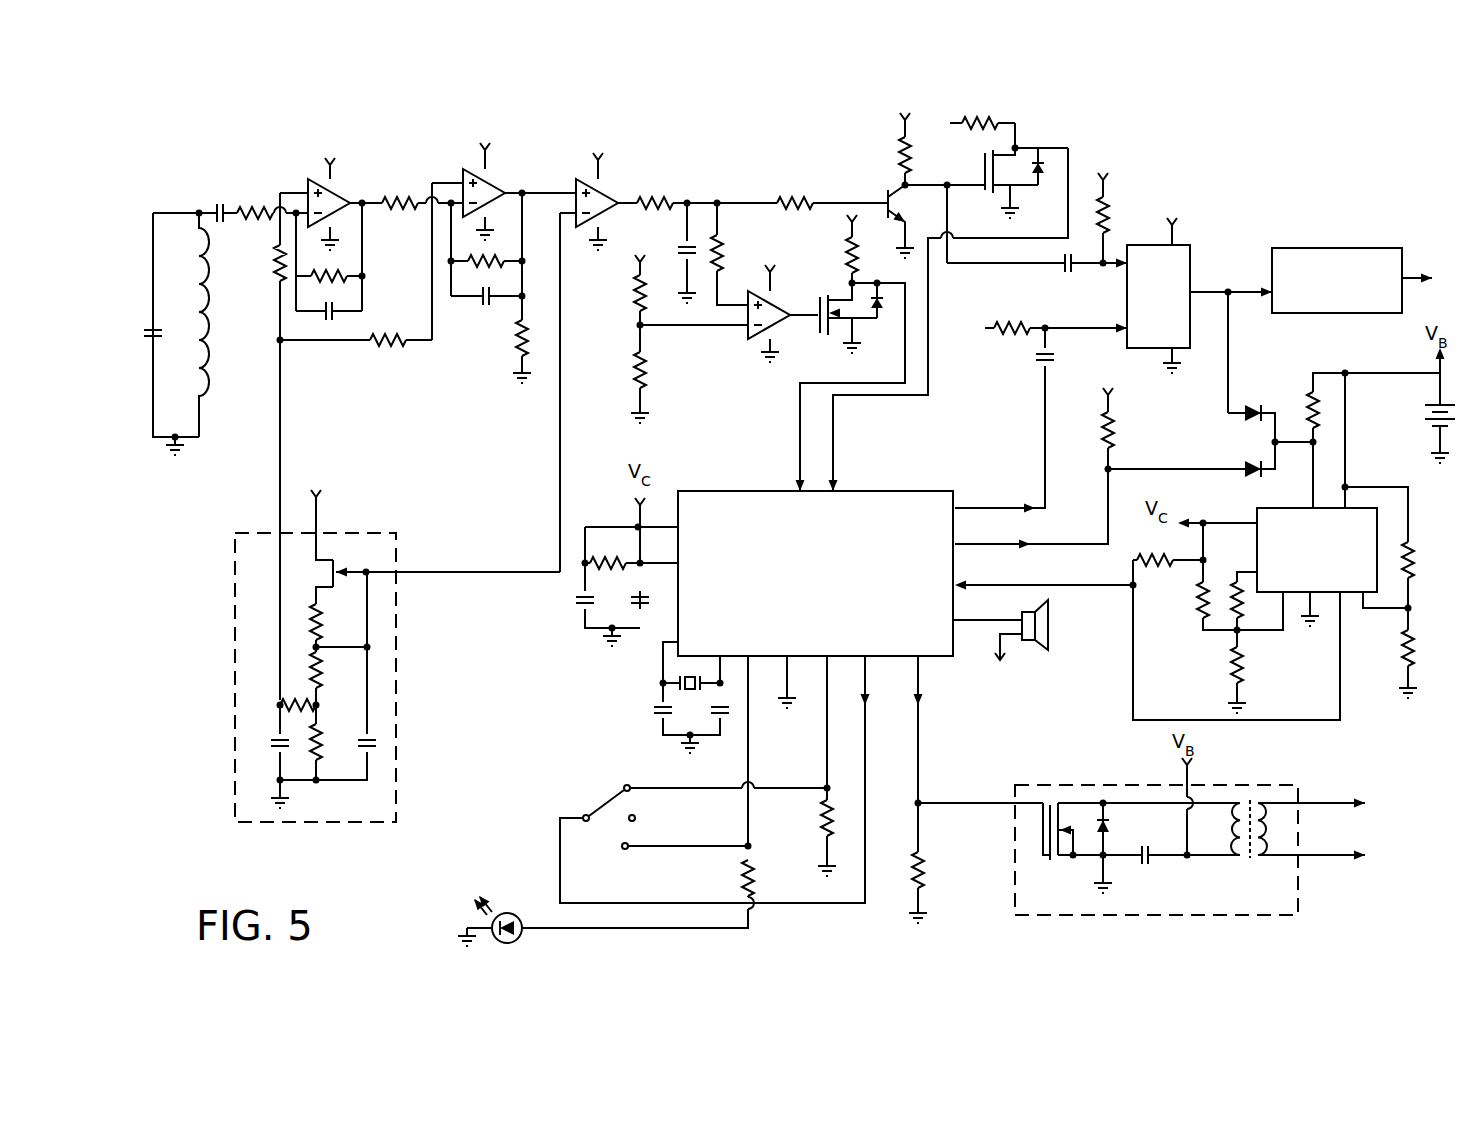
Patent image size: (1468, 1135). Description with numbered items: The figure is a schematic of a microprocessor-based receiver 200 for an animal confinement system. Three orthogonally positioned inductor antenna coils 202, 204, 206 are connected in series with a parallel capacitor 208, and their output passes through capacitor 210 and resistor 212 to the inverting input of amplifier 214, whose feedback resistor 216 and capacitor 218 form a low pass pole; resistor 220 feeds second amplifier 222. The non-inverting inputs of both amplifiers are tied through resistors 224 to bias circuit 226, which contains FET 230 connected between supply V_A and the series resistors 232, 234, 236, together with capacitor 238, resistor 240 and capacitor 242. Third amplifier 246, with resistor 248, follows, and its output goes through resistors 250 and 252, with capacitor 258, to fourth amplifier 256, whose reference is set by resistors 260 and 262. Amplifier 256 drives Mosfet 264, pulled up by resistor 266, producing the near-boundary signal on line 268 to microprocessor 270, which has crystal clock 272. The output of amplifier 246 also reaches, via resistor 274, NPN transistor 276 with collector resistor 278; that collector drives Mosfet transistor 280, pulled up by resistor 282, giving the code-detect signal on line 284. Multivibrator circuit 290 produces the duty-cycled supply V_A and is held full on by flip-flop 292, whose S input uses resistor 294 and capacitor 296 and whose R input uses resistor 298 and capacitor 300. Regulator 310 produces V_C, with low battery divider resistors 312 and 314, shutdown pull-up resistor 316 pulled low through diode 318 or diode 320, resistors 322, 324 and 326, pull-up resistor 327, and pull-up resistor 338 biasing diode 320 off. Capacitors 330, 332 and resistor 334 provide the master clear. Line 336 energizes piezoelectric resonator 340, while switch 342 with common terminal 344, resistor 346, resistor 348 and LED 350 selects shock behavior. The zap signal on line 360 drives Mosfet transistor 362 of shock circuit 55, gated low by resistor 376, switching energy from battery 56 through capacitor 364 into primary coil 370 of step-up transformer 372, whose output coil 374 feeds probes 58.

The shock circuit 55 is at (1101, 780).
The battery 56 is at (1430, 424).
The probes 58 is at (1349, 826).
The microprocessor-based receiver 200 is at (453, 812).
The inductor antenna coil 202 is at (218, 300).
The inductor antenna coil 204 is at (210, 340).
The inductor antenna coil 206 is at (213, 410).
The capacitor 208 is at (172, 336).
The capacitor 210 is at (217, 205).
The resistor 212 is at (244, 200).
The amplifier 214 is at (340, 192).
The resistor 216 is at (350, 272).
The capacitor 218 is at (330, 324).
The resistor 220 is at (403, 209).
The second amplifier 222 is at (504, 176).
The resistor 224 is at (277, 266).
The bias circuit 226 is at (410, 529).
The N-channel FET 230 is at (344, 555).
The resistor 232 is at (294, 616).
The resistor 234 is at (330, 686).
The resistor 236 is at (335, 765).
The capacitor 238 is at (260, 744).
The resistor 240 is at (286, 702).
The capacitor 242 is at (376, 741).
The third amplifier 246 is at (623, 184).
The resistor 248 is at (520, 344).
The resistor 250 is at (669, 190).
The resistor 252 is at (731, 230).
The fourth amplifier 256 is at (758, 344).
The capacitor 258 is at (698, 238).
The resistor 260 is at (634, 290).
The resistor 262 is at (634, 368).
The N-channel Mosfet 264 is at (840, 327).
The resistor 266 is at (848, 260).
The line 268 is at (798, 416).
The microprocessor 270 is at (882, 488).
The crystal clock 272 is at (640, 712).
The resistor 274 is at (800, 195).
The NPN transistor 276 is at (882, 200).
The resistor 278 is at (895, 153).
The Mosfet transistor 280 is at (1038, 148).
The resistor 282 is at (1000, 122).
The line 284 is at (931, 390).
The multivibrator circuit 290 is at (1327, 248).
The flip-flop 292 is at (1206, 240).
The resistor 294 is at (1112, 200).
The capacitor 296 is at (1059, 280).
The resistor 298 is at (1010, 344).
The capacitor 300 is at (1052, 358).
The regulator 310 is at (1300, 506).
The resistor 312 is at (1416, 564).
The resistor 314 is at (1416, 652).
The resistor 316 is at (1303, 410).
The diode 318 is at (1237, 418).
The diode 320 is at (1238, 464).
The resistor 322 is at (1244, 625).
The resistor 324 is at (1250, 675).
The resistor 326 is at (1201, 626).
The resistor 327 is at (1165, 568).
The capacitor 330 is at (576, 604).
The capacitor 332 is at (680, 580).
The resistor 334 is at (606, 554).
The line 336 is at (998, 615).
The pull-up resistor 338 is at (1100, 428).
The piezoelectric resonator 340 is at (1046, 649).
The switch 342 is at (600, 794).
The common terminal 344 is at (580, 814).
The resistor 346 is at (815, 826).
The resistor 348 is at (738, 884).
The LED 350 is at (522, 896).
The line 360 is at (931, 738).
The N-channel Mosfet transistor 362 is at (1045, 870).
The capacitor 364 is at (1134, 870).
The primary coil 370 is at (1236, 842).
The step-up transformer 372 is at (1244, 790).
The output coil 374 is at (1266, 842).
The resistor 376 is at (934, 864).